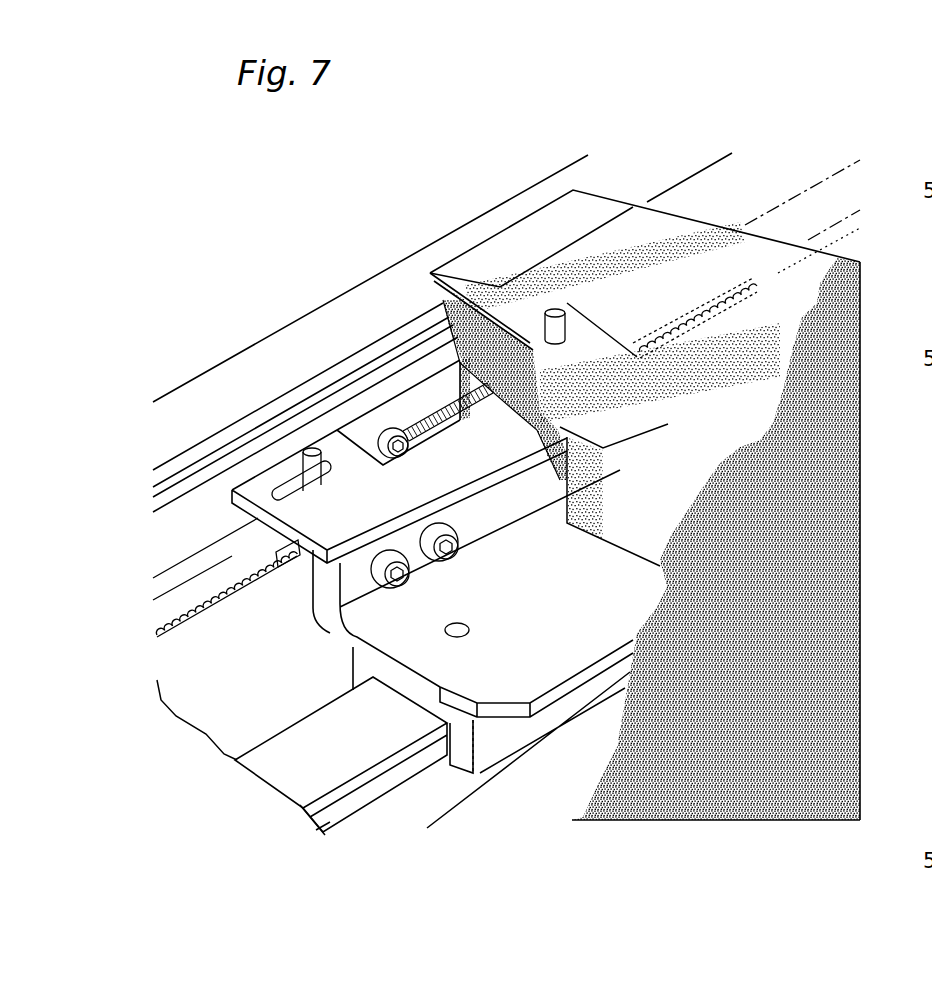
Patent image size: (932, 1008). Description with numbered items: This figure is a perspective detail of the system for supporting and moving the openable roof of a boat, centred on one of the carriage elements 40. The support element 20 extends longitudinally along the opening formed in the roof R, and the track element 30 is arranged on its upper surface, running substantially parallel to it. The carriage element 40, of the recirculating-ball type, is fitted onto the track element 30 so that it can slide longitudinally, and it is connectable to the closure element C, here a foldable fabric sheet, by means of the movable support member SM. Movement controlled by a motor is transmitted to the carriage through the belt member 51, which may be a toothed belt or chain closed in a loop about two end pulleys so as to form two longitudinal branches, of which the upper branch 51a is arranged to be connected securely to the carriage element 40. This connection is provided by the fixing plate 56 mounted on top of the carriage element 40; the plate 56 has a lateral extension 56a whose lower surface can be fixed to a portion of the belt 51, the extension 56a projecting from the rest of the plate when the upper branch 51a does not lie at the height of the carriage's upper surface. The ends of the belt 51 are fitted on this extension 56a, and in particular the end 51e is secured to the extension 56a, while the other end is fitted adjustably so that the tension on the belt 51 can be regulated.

The support member SM is at (603, 208).
The roof R is at (317, 322).
The closure element C is at (845, 527).
The lateral extension 56a is at (267, 482).
The fixing plate 56 is at (555, 693).
The belt member 51 is at (196, 625).
The upper branch 51a is at (225, 568).
The belt end 51e is at (268, 543).
The track element 30 is at (360, 796).
The carriage element 40 is at (494, 730).
The support element 20 is at (392, 813).